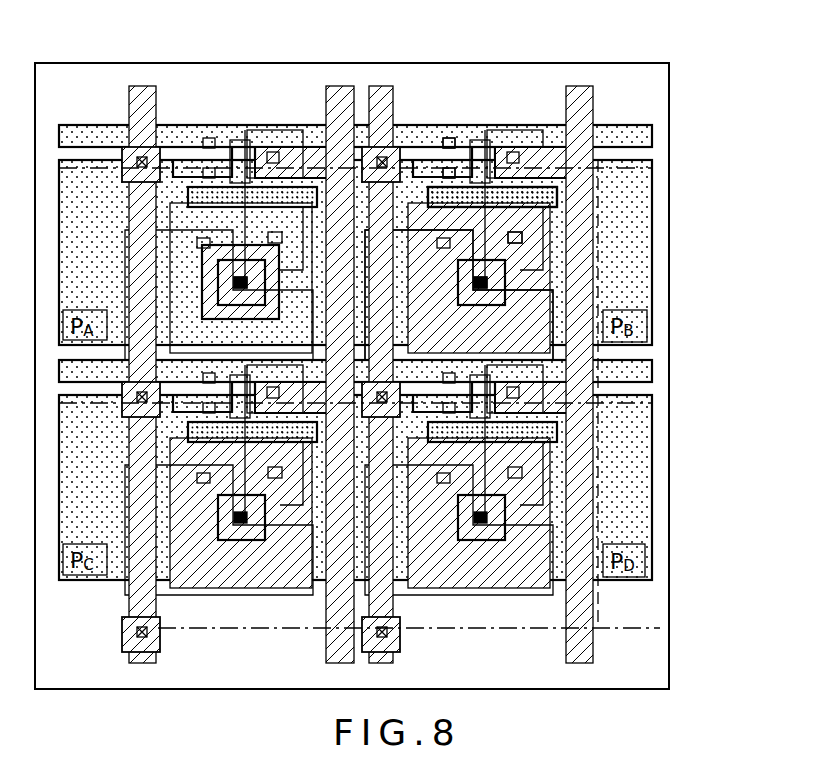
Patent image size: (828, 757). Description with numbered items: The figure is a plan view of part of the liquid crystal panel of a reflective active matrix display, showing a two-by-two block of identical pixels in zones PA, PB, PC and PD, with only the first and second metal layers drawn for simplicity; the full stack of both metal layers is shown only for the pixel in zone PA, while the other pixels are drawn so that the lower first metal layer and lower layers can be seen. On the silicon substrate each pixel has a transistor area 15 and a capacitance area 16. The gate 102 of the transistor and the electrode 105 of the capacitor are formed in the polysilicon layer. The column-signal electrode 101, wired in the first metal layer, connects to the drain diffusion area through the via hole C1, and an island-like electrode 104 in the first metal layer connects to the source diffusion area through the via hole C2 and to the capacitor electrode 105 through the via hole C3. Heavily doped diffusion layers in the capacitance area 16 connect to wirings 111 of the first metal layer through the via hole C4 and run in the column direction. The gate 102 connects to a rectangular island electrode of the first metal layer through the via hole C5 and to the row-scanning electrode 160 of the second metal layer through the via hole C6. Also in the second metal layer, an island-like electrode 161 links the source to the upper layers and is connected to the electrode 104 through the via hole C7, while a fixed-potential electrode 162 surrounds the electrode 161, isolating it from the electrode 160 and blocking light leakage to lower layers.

The transistor area 15 is at (506, 126).
The capacitance area 16 is at (557, 307).
The column-signal electrode 101 is at (579, 87).
The gate 102 is at (557, 195).
The island-like electrode 104 is at (530, 277).
The electrode of the capacitor 105 is at (597, 289).
The wirings 111 is at (383, 87).
The row-scanning electrode 160 is at (652, 133).
The island-like electrode 161 is at (225, 270).
The fixed-potential electrode 162 is at (640, 297).
The via hole C1 is at (514, 157).
The via hole C2 is at (532, 230).
The via hole C3 is at (478, 280).
The via hole C4 is at (378, 160).
The via hole C5 is at (449, 172).
The via hole C6 is at (451, 142).
The via hole C7 is at (234, 281).